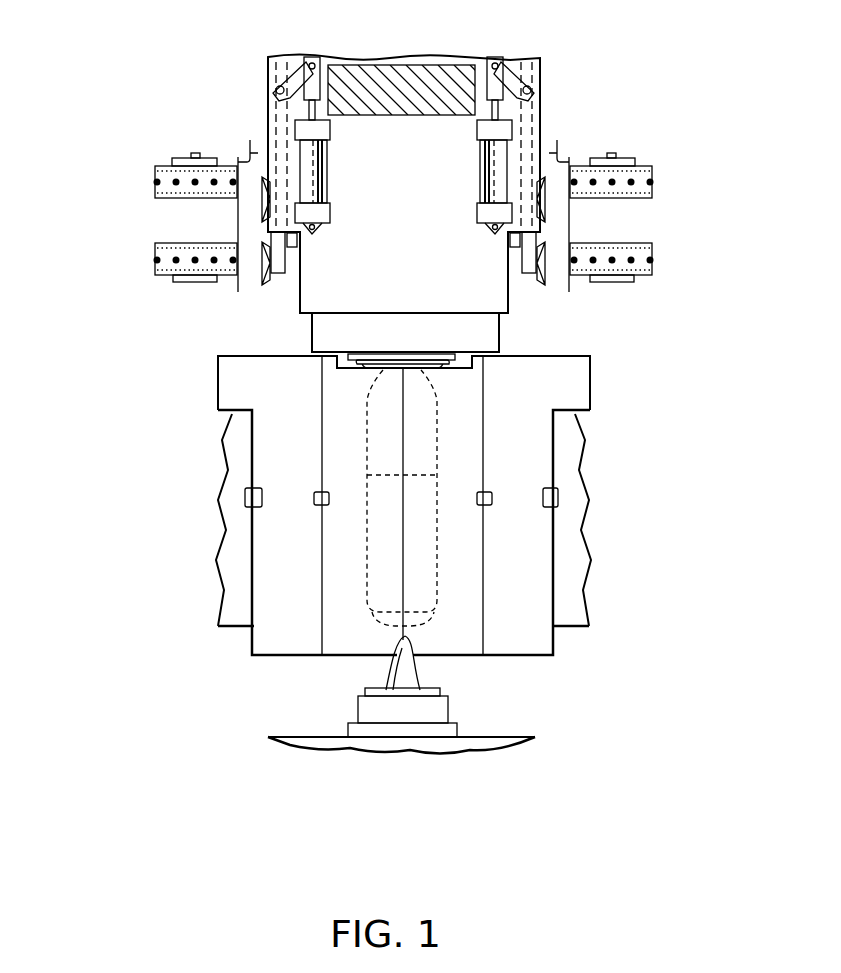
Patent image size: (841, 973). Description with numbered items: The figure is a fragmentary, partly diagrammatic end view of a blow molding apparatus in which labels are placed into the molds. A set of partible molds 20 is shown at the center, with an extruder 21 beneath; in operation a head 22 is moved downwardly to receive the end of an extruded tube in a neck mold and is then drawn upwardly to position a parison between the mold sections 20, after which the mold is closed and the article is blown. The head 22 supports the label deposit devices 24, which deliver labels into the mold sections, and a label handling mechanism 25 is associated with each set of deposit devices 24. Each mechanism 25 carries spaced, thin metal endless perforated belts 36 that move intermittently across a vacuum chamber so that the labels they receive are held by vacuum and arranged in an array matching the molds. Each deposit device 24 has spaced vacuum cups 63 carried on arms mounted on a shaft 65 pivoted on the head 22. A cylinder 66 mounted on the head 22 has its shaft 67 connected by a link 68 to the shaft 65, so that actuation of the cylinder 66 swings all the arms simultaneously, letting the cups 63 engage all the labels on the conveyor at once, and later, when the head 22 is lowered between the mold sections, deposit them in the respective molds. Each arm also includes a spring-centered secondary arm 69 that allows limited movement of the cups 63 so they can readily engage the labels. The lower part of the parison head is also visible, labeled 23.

The partible molds 20 is at (226, 388).
The extruder 21 is at (438, 742).
The head 22 is at (420, 58).
The parison head / mandrel 23 is at (392, 358).
The label deposit devices 24 is at (268, 130).
The label handling mechanism 25 is at (414, 189).
The endless perforated belts 36 is at (156, 246).
The vacuum cups 63 is at (262, 195).
The shaft 65 is at (277, 88).
The cylinder 66 is at (490, 167).
The shaft 67 is at (480, 108).
The link 68 is at (297, 72).
The secondary arm 69 is at (282, 255).